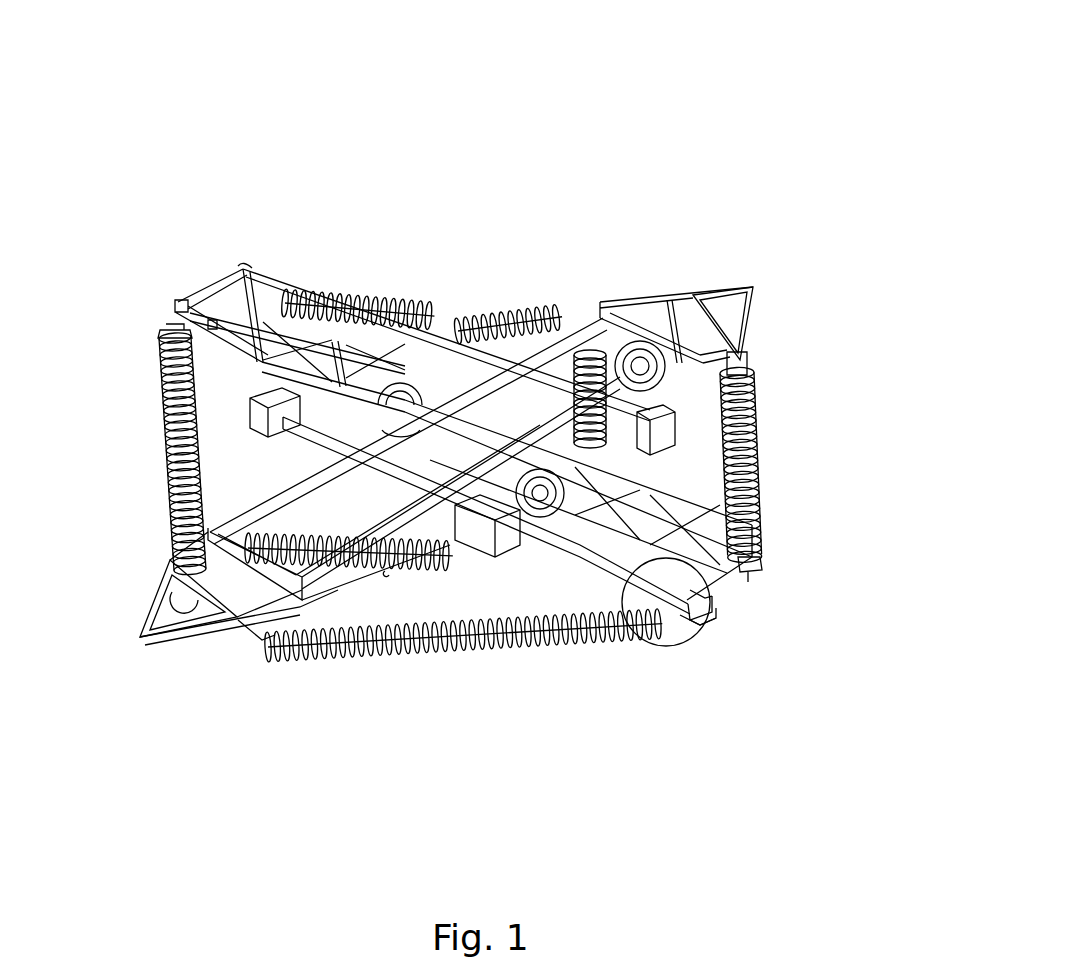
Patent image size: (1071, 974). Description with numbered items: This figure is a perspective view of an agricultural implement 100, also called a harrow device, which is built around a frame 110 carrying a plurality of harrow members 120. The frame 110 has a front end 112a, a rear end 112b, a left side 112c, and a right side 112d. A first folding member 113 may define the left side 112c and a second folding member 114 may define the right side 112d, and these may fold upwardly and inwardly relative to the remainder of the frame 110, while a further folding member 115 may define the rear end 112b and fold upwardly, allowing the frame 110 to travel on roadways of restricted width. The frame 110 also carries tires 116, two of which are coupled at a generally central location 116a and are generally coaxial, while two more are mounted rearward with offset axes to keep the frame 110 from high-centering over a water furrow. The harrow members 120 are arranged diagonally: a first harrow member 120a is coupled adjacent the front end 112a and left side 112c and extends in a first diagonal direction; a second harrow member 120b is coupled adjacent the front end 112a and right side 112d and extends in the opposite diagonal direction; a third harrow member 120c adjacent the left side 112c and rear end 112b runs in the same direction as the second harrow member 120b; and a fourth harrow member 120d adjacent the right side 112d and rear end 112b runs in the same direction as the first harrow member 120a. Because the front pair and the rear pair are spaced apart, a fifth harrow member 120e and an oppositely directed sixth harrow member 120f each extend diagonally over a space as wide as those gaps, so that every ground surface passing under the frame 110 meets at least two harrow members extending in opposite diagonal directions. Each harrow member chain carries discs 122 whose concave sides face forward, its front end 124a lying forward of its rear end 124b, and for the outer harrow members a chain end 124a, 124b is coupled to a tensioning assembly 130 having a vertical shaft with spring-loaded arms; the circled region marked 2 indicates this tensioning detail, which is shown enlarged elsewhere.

The agricultural implement 100 is at (657, 88).
The frame 110 is at (592, 317).
The front end 112a is at (165, 645).
The rear end 112b is at (768, 322).
The left side 112c is at (725, 598).
The right side 112d is at (196, 272).
The first folding member 113 is at (673, 498).
The second folding member 114 is at (257, 375).
The folding member 115 is at (732, 290).
The tires 116 is at (390, 393).
The central location 116a is at (502, 418).
The harrow members 120 is at (365, 283).
The first harrow member 120a is at (255, 660).
The second harrow member 120b is at (152, 507).
The third harrow member 120c is at (770, 511).
The fourth harrow member 120d is at (527, 300).
The fifth harrow member 120e is at (387, 573).
The sixth harrow member 120f is at (595, 367).
The discs 122 is at (545, 648).
The front end 124a is at (757, 586).
The rear end 124b is at (167, 330).
The tensioning assembly 130 is at (720, 623).
The detail view reference 2 is at (686, 643).